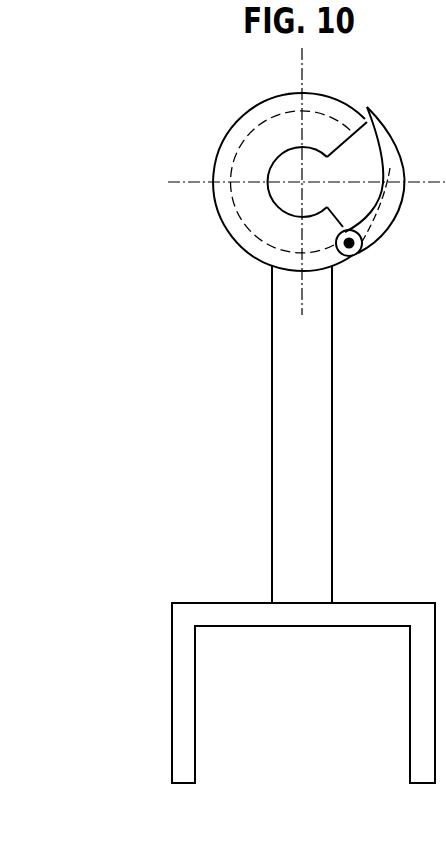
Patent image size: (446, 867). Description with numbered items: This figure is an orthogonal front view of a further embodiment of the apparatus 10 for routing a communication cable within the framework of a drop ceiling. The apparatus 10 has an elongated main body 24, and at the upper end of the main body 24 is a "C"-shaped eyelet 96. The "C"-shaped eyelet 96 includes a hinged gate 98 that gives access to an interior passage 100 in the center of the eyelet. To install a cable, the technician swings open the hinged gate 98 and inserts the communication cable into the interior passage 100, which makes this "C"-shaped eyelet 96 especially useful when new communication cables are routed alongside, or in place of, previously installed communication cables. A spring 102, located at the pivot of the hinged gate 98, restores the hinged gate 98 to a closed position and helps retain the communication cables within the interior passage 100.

The apparatus 10 is at (78, 116).
The main body 24 is at (272, 405).
The "C"-shaped eyelet 96 is at (240, 118).
The hinged gate 98 is at (399, 212).
The interior passage 100 is at (272, 198).
The spring 102 is at (368, 230).